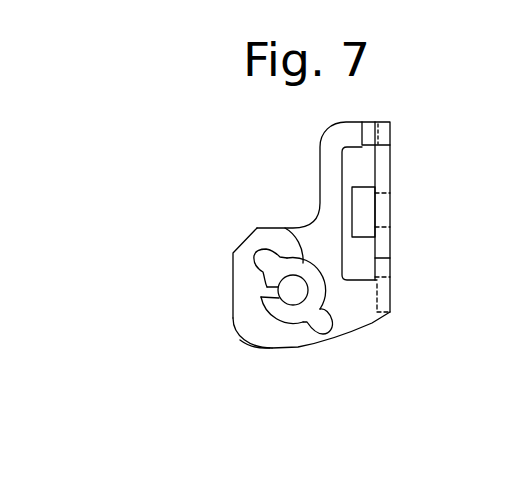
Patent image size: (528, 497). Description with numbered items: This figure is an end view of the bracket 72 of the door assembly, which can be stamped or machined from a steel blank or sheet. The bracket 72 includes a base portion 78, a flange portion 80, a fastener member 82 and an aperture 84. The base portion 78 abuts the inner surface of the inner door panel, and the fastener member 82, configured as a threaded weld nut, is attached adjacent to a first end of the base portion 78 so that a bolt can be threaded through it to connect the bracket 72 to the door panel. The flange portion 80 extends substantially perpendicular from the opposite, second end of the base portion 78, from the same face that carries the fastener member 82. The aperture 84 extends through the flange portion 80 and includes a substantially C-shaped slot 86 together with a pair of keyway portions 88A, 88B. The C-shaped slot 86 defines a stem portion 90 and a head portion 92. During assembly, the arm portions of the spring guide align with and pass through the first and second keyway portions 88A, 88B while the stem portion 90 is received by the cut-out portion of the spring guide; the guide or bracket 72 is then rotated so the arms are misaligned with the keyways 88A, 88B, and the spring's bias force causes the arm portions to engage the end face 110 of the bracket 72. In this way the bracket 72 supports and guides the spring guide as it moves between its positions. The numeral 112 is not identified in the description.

The bracket 72 is at (241, 178).
The base portion 78 is at (392, 174).
The flange portion 80 is at (283, 349).
The fastener member 82 is at (365, 211).
The aperture 84 is at (262, 327).
The C-shaped slot 86 is at (285, 228).
The first keyway portion 88A is at (253, 255).
The second keyway portion 88B is at (341, 333).
The stem portion 90 is at (267, 287).
The head portion 92 is at (299, 292).
The end face 110 is at (248, 313).
The tab 112 is at (360, 162).